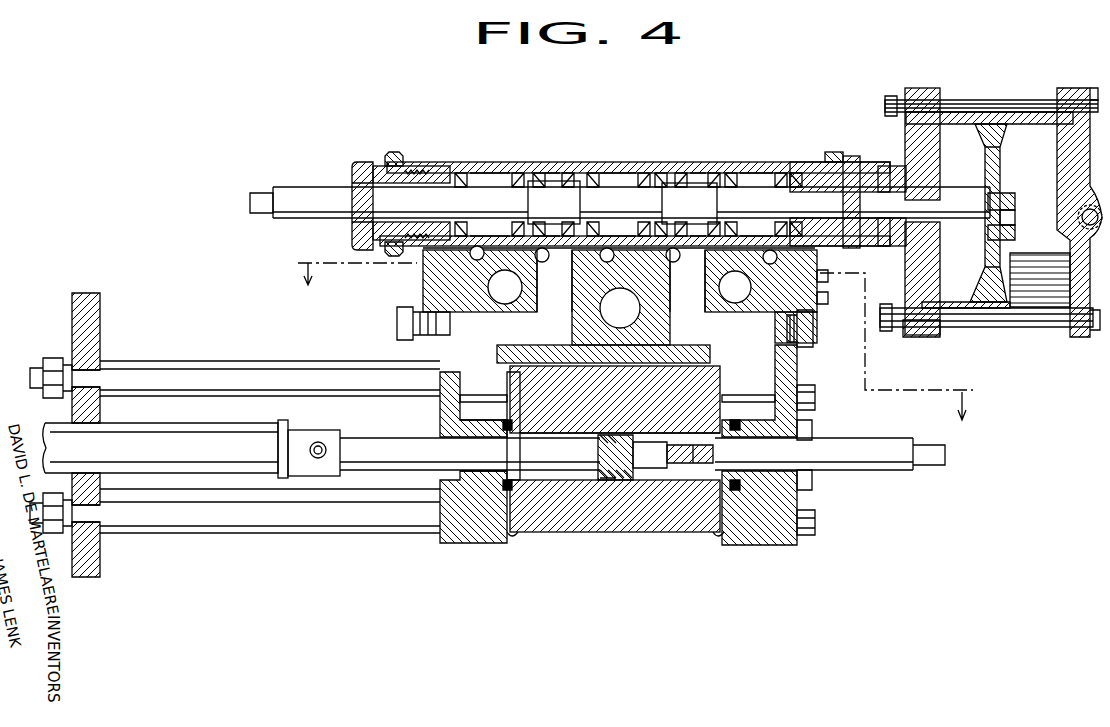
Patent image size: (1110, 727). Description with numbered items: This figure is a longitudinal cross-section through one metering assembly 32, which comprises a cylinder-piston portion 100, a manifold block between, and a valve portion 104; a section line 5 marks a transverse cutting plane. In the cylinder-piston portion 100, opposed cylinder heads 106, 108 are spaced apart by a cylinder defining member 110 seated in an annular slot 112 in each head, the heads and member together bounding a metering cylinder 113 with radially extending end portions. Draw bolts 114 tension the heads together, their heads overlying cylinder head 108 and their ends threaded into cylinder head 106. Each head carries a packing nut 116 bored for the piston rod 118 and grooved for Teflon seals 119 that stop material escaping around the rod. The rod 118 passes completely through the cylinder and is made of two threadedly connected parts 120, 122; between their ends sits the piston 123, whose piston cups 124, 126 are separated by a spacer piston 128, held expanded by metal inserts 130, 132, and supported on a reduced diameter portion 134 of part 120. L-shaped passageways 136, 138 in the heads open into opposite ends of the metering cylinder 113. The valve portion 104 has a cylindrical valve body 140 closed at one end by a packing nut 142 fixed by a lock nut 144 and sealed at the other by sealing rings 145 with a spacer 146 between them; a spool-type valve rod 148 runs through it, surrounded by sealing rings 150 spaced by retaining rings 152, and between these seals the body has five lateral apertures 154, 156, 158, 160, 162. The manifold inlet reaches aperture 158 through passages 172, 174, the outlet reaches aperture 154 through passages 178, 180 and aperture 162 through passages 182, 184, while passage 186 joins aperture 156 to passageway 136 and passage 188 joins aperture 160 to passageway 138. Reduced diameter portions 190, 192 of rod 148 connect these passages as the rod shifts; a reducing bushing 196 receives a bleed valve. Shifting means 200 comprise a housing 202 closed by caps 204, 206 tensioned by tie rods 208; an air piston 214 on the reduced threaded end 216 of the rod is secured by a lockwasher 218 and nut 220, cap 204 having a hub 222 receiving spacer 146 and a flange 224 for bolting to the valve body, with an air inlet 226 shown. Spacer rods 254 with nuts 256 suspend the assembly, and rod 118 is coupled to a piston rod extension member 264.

The section line 5- 5 is at (639, 346).
The metering assembly 32 is at (581, 610).
The cylinder-piston portion 100 is at (587, 541).
The valve portion 104 is at (453, 153).
The cylinder head 106 is at (470, 520).
The cylinder head 108 is at (760, 520).
The cylinder defining member 110 is at (645, 520).
The annular slot 112 is at (512, 540).
The metering cylinder 113 is at (548, 433).
The draw bolts 114 is at (808, 395).
The packing nut 116 is at (440, 475).
The piston rod 118 is at (630, 447).
The Teflon seals 119 is at (503, 483).
The rod part 120 is at (372, 440).
The rod part 122 is at (830, 448).
The piston 123 is at (616, 492).
The piston cup 124 is at (610, 435).
The piston cup 126 is at (630, 435).
The spacer piston 128 is at (614, 420).
The metal insert 130 is at (605, 480).
The metal insert 132 is at (635, 480).
The reduced diameter portion 134 is at (665, 442).
The L-shaped passageway 136 is at (500, 412).
The L-shaped passageway 138 is at (778, 413).
The cylindrical valve body 140 is at (640, 170).
The packing nut 142 is at (366, 166).
The lock nut 144 is at (395, 152).
The sealing rings 145 is at (790, 176).
The spacer 146 is at (810, 166).
The spool-type valve rod 148 is at (320, 193).
The sealing rings 150 is at (470, 174).
The retaining rings 152 is at (518, 172).
The laterally opening aperture 154 is at (477, 257).
The laterally opening aperture 156 is at (542, 262).
The laterally opening aperture 158 is at (600, 262).
The laterally opening aperture 160 is at (665, 262).
The laterally opening aperture 162 is at (817, 276).
The manifold passage 172 is at (620, 330).
The manifold passage 174 is at (645, 300).
The manifold passage 178 is at (522, 292).
The manifold passage 180 is at (488, 282).
The manifold passage 182 is at (719, 290).
The manifold passage 184 is at (817, 298).
The passage 186 is at (530, 333).
The passage 188 is at (746, 342).
The reduced diameter portion 190 is at (565, 192).
The reduced diameter portion 192 is at (685, 205).
The reducing bushing 196 is at (400, 330).
The valve rod shifting means 200 is at (1002, 92).
The cylindrical housing 202 is at (948, 318).
The cap 204 is at (917, 335).
The cap 206 is at (1077, 336).
The tie rods 208 is at (1022, 103).
The air piston 214 is at (988, 170).
The reduced threaded end 216 is at (1013, 208).
The lockwasher 218 is at (1000, 196).
The nut 220 is at (1010, 206).
The hub 222 is at (850, 176).
The flange 224 is at (836, 152).
The air inlet 226 is at (1085, 220).
The spacer rods 254 is at (248, 378).
The nuts 256 is at (52, 358).
The piston rod extension member 264 is at (205, 447).